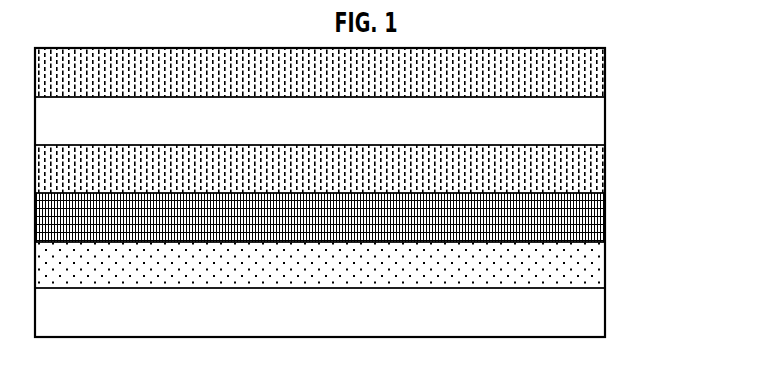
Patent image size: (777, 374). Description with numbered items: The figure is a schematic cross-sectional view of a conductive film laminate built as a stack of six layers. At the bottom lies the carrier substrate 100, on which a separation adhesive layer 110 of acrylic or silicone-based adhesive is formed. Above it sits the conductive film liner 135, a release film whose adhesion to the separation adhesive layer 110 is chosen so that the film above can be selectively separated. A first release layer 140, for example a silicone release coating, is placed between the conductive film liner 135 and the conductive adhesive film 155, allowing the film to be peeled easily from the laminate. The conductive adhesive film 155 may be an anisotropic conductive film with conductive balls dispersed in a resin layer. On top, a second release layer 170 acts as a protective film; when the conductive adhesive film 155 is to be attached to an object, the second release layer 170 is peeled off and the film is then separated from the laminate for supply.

The carrier substrate 100 is at (593, 317).
The separation adhesive layer 110 is at (595, 277).
The conductive film liner 135 is at (593, 225).
The first release layer 140 is at (593, 175).
The conductive adhesive film 155 is at (592, 133).
The second release layer 170 is at (593, 78).